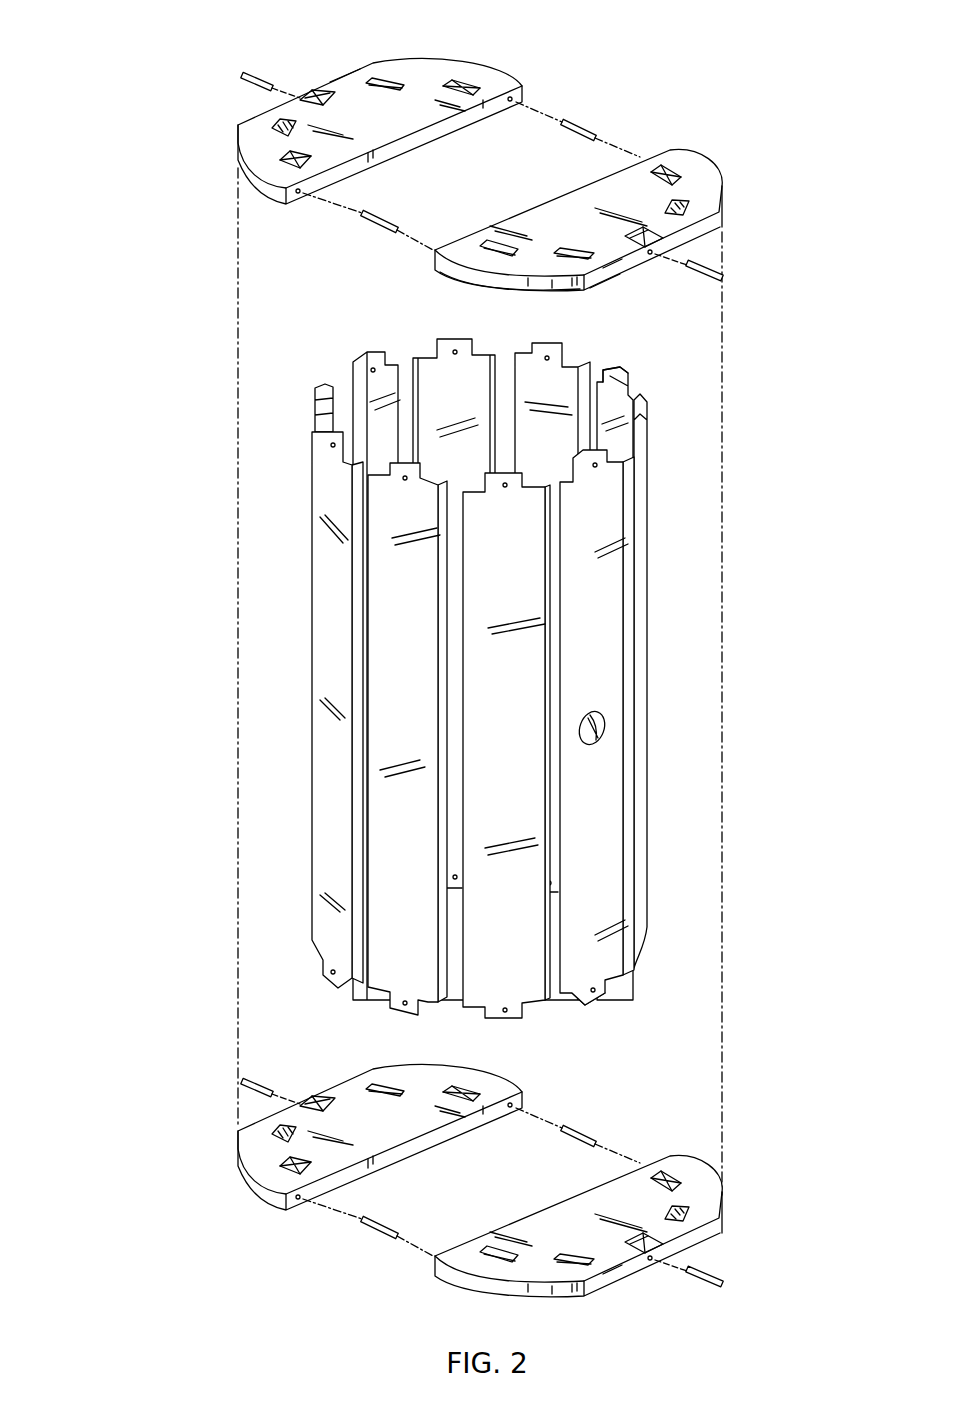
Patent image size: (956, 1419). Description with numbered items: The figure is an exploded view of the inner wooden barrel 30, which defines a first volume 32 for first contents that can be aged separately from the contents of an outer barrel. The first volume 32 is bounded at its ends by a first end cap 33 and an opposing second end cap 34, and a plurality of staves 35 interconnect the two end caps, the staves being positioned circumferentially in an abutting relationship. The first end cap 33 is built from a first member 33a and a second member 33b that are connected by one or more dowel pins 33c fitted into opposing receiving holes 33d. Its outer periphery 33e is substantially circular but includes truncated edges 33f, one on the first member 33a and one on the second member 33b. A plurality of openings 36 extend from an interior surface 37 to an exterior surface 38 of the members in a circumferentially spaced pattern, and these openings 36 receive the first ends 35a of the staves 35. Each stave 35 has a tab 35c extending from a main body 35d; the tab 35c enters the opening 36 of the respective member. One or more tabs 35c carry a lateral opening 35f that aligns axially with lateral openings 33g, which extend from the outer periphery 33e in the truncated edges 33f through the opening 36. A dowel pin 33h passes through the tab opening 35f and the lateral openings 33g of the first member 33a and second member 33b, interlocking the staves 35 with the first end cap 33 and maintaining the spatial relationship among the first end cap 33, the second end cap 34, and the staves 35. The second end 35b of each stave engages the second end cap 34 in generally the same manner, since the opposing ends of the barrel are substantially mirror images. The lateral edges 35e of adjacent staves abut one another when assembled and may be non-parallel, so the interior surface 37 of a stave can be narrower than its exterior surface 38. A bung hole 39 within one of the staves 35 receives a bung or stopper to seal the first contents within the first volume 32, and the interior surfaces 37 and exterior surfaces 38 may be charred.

The inner wooden barrel 30 is at (113, 165).
The first volume 32 is at (509, 537).
The first end cap 33 is at (506, 166).
The first member 33a is at (427, 82).
The second member 33b is at (690, 170).
The dowel pin 33c is at (580, 125).
The receiving hole 33d is at (506, 94).
The outer periphery 33e is at (482, 266).
The truncated edge 33f is at (344, 81).
The lateral opening 33g is at (321, 99).
The dowel pin 33h is at (250, 73).
The second end cap 34 is at (760, 1189).
The stave 35 is at (509, 537).
The first end 35a is at (646, 691).
The second end 35b is at (664, 743).
The tab 35c is at (623, 372).
The main body 35d is at (595, 864).
The lateral edge 35e is at (560, 805).
The lateral opening 35f is at (596, 466).
The opening 36 is at (470, 63).
The interior surface 37 is at (417, 148).
The exterior surface 38 is at (355, 110).
The bung hole 39 is at (608, 720).